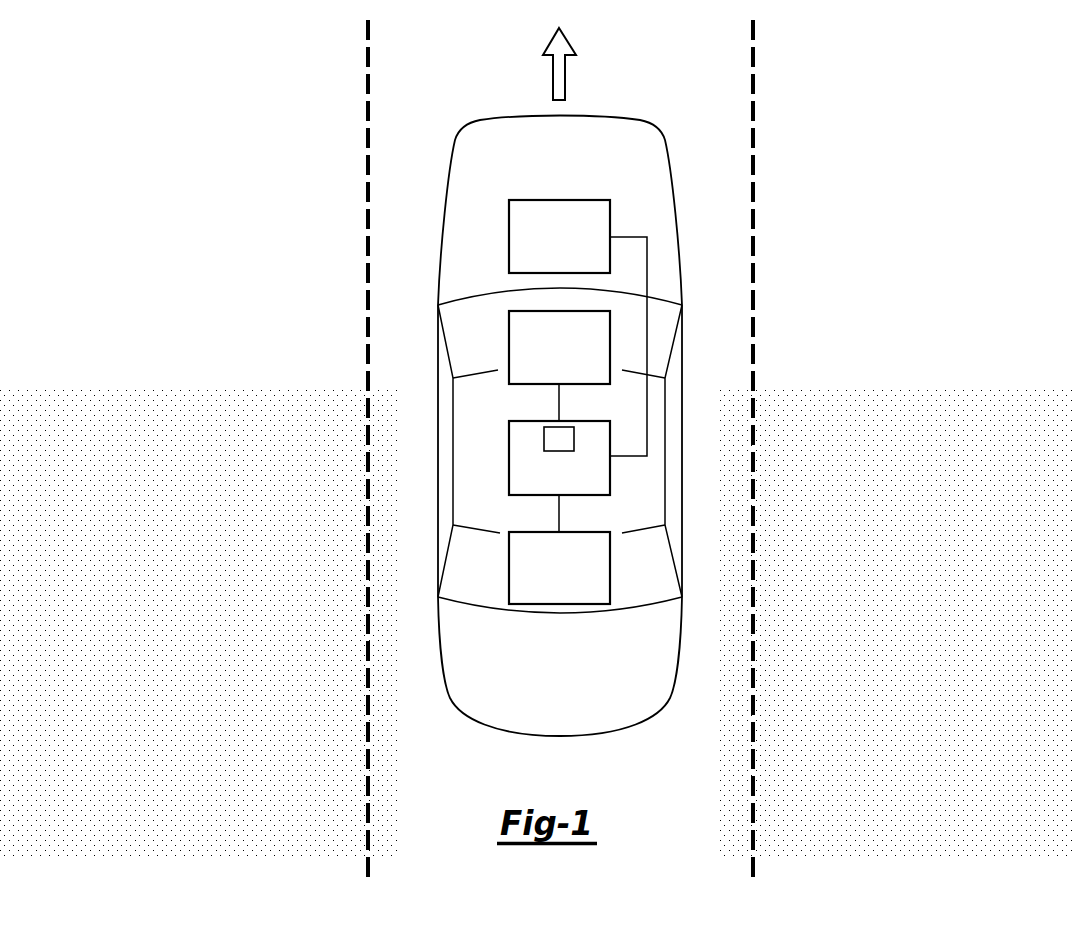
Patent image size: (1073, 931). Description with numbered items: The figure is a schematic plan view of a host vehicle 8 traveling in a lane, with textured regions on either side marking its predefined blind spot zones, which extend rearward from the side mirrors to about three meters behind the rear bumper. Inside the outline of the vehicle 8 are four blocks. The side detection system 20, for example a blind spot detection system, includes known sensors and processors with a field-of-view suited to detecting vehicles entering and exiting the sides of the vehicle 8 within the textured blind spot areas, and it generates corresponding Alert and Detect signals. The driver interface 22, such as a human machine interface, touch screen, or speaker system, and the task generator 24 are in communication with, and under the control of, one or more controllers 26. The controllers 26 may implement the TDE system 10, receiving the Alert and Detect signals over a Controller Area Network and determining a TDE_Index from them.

The host vehicle 8 is at (502, 116).
The TDE system 10 is at (559, 440).
The side detection system 20 is at (509, 568).
The driver interface 22 is at (509, 347).
The task generator 24 is at (509, 237).
The controllers 26 is at (533, 458).